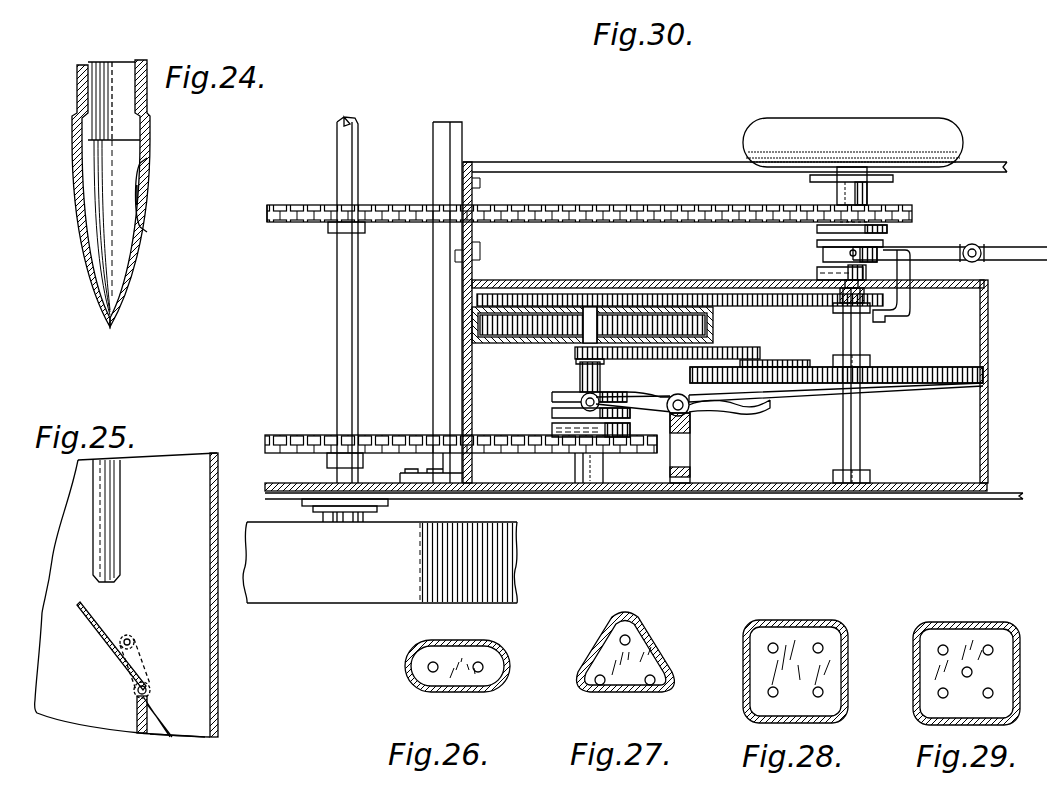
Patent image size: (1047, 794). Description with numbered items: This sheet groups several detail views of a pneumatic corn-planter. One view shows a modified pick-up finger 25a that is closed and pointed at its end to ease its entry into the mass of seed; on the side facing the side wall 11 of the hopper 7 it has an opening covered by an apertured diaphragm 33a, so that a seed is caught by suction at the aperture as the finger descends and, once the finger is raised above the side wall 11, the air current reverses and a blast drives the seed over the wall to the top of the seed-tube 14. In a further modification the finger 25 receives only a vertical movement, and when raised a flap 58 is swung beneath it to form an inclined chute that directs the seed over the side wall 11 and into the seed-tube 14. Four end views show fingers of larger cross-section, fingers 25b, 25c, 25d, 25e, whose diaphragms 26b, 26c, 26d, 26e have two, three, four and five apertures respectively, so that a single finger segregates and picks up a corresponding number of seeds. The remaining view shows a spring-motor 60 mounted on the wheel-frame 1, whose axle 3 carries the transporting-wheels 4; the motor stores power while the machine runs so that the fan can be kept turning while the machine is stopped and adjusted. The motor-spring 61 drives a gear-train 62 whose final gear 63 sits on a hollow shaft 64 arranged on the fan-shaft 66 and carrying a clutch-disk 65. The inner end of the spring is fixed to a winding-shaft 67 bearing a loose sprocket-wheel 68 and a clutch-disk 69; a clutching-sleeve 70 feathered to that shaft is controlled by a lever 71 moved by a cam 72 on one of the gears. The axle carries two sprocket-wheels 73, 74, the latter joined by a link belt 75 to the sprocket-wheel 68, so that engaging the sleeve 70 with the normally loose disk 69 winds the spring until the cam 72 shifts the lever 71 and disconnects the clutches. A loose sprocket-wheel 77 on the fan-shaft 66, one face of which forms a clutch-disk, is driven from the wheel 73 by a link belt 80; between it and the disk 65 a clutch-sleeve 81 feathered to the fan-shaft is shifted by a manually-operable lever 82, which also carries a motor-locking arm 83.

In FIG. 30, the wheel-frame 1 is at (780, 503).
In FIG. 30, the axle 3 is at (355, 333).
In FIG. 30, the transporting-wheels 4 is at (350, 595).
In FIG. 25, the hopper 7 is at (218, 640).
In FIG. 25, the side wall 11 is at (147, 697).
In FIG. 25, the seed-tube 14 is at (190, 728).
In FIG. 25, the slot 25 is at (120, 536).
In FIG. 24, the pick-up finger 25a is at (72, 238).
In FIG. 26, the pick-up finger 25b is at (423, 644).
In FIG. 27, the pick-up finger 25c is at (643, 625).
In FIG. 28, the pick-up finger 25d is at (827, 613).
In FIG. 29, the pick-up finger 25e is at (975, 622).
In FIG. 26, the diaphragm 26b is at (422, 686).
In FIG. 27, the diaphragm 26c is at (603, 652).
In FIG. 28, the diaphragm 26d is at (758, 672).
In FIG. 29, the diaphragm 26e is at (933, 670).
In FIG. 24, the apertured diaphragm 33a is at (147, 205).
In FIG. 25, the flap 58 is at (88, 630).
In FIG. 30, the spring-motor 60 is at (527, 343).
In FIG. 30, the motor-spring 61 is at (465, 322).
In FIG. 30, the gear-train 62 is at (743, 306).
In FIG. 30, the final gear 63 is at (845, 297).
In FIG. 30, the hollow shaft 64 is at (845, 303).
In FIG. 30, the clutch-disk 65 is at (818, 273).
In FIG. 30, the fan-shaft 66 is at (883, 228).
In FIG. 30, the winding-shaft 67 is at (600, 376).
In FIG. 30, the loose sprocket-wheel 68 is at (627, 455).
In FIG. 30, the clutch-disk 69 is at (552, 430).
In FIG. 30, the clutching-sleeve 70 is at (553, 401).
In FIG. 30, the lever 71 is at (700, 412).
In FIG. 30, the cam 72 is at (795, 388).
In FIG. 30, the sprocket-wheel 73 is at (307, 221).
In FIG. 30, the sprocket-wheel 74 is at (287, 425).
In FIG. 30, the link belt 75 is at (400, 437).
In FIG. 30, the loose sprocket-wheel 77 is at (847, 218).
In FIG. 30, the link belt 80 is at (653, 199).
In FIG. 30, the clutch-sleeve 81 is at (818, 253).
In FIG. 30, the manually-operable lever 82 is at (1010, 237).
In FIG. 30, the motor-locking arm 83 is at (903, 308).